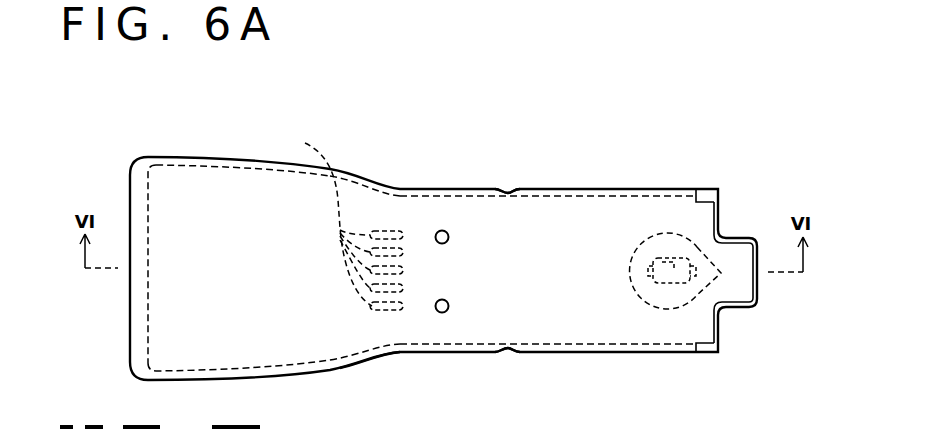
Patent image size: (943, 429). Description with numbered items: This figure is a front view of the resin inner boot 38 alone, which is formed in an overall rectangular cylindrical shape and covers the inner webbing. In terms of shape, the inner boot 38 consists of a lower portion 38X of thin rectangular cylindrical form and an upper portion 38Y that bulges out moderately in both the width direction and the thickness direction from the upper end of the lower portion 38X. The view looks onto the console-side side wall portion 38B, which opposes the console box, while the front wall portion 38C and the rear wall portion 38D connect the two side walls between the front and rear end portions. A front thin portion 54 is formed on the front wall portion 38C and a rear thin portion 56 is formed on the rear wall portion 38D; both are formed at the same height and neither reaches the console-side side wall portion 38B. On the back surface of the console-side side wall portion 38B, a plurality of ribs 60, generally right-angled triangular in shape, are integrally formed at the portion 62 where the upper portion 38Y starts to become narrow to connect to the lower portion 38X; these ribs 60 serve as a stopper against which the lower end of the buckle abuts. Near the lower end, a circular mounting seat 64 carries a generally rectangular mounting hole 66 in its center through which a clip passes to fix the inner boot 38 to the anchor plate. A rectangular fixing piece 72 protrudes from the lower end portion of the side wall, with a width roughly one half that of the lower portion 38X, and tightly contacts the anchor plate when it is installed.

The inner boot 38 is at (513, 115).
The lower portion 38X is at (544, 236).
The upper portion 38Y is at (204, 196).
The console-side side wall portion 38B is at (207, 348).
The rear wall portion 38D is at (390, 186).
The front wall portion 38C is at (441, 359).
The ribs 60 is at (336, 219).
The rear thin portion 56 is at (505, 191).
The front thin portion 54 is at (507, 351).
The narrowing portion 62 is at (366, 362).
The mounting seat 64 is at (665, 284).
The mounting hole 66 is at (658, 257).
The fixing piece 72 is at (750, 292).